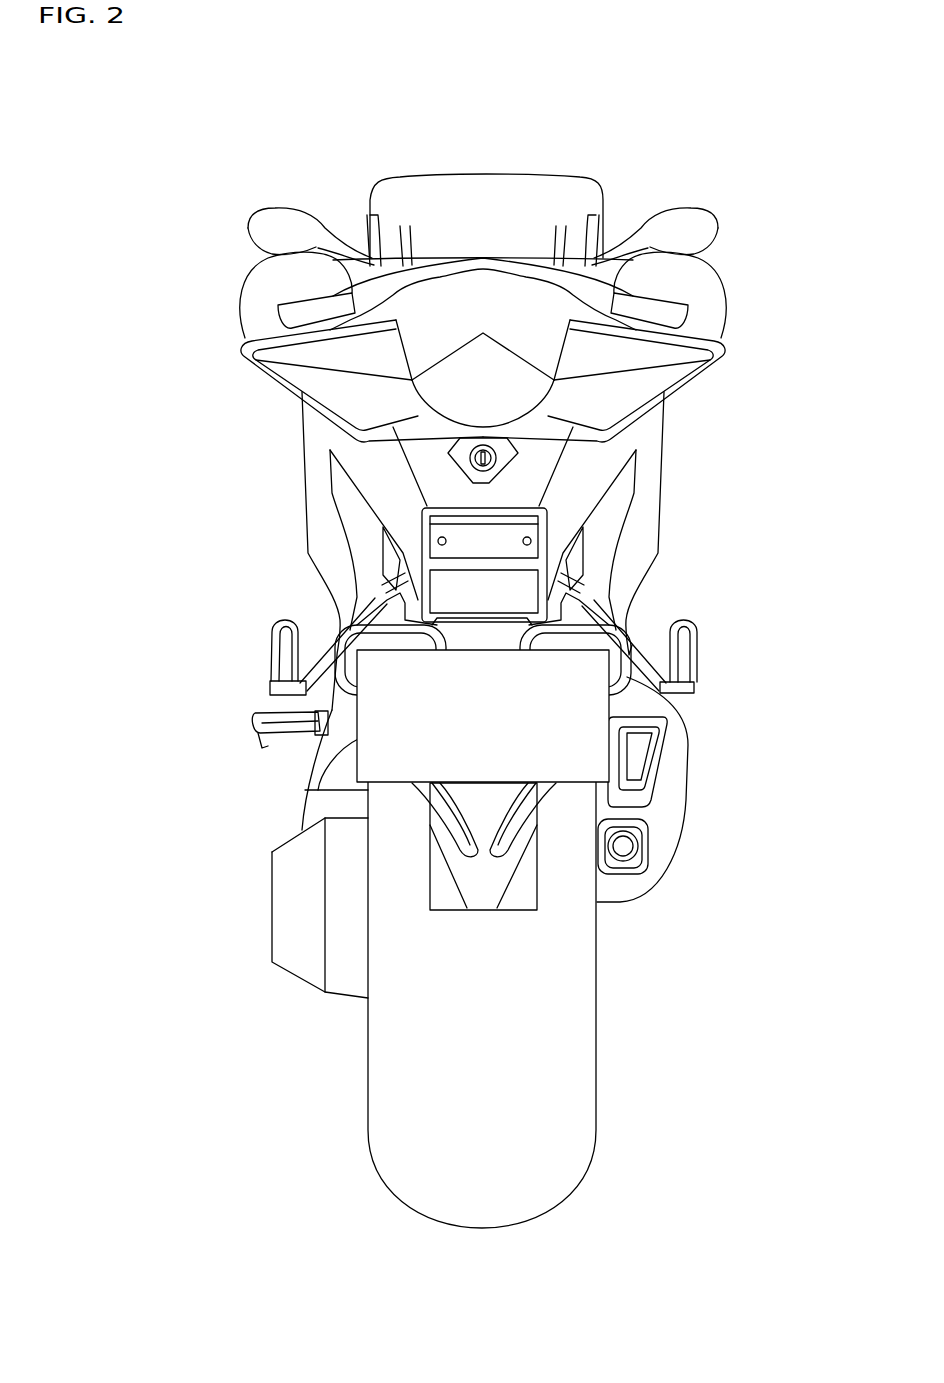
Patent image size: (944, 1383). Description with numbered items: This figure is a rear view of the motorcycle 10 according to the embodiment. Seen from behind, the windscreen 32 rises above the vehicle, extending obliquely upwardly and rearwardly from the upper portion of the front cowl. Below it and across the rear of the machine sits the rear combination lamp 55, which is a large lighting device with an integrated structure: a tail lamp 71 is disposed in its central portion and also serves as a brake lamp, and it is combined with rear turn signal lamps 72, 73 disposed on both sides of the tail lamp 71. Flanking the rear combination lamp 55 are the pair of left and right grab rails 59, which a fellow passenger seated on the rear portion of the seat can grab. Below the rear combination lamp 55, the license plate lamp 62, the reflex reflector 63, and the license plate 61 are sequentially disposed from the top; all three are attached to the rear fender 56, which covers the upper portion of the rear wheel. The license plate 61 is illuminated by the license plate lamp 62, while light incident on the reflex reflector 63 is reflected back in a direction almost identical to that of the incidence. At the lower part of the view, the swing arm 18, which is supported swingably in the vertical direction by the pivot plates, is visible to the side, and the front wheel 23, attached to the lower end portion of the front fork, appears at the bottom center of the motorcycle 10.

The motorcycle 10 is at (243, 170).
The windscreen 32 is at (483, 185).
The tail lamp 71 is at (428, 278).
The grab rails 59 is at (252, 298).
The rear combination lamp 55 is at (235, 343).
The rear turn signal lamp 72 is at (278, 390).
The rear turn signal lamp 73 is at (685, 392).
The rear fender 56 is at (370, 505).
The license plate lamp 62 is at (527, 528).
The reflex reflector 63 is at (520, 590).
The license plate 61 is at (578, 710).
The swing arm 18 is at (315, 808).
The front wheel 23 is at (482, 1200).